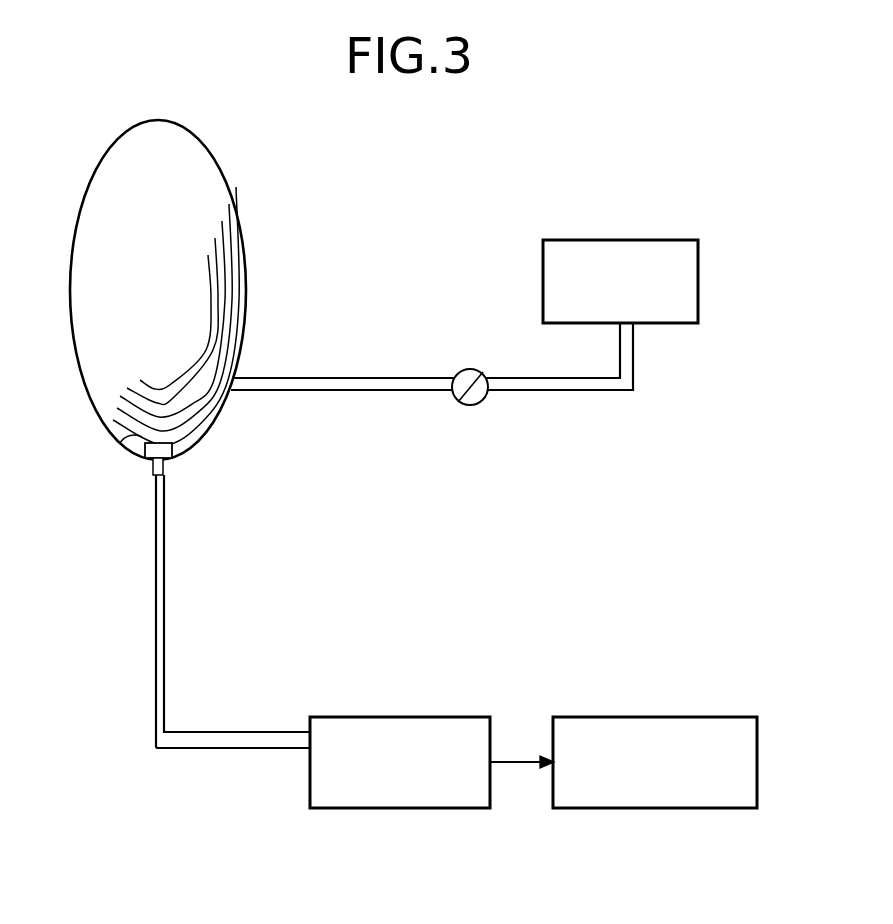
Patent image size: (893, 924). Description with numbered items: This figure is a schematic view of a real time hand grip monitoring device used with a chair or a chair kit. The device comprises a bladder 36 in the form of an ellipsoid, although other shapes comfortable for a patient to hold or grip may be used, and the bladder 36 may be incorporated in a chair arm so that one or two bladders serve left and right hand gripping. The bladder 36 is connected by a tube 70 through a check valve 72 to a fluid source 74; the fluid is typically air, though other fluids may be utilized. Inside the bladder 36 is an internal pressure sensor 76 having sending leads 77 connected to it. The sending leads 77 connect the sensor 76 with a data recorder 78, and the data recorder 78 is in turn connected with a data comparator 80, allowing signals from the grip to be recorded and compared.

The bladder 36 is at (202, 207).
The tube 70 is at (295, 385).
The check valve 72 is at (470, 405).
The fluid source 74 is at (625, 255).
The internal pressure sensor 76 is at (117, 438).
The sending leads 77 is at (253, 732).
The data recorder 78 is at (407, 800).
The data comparator 80 is at (627, 808).